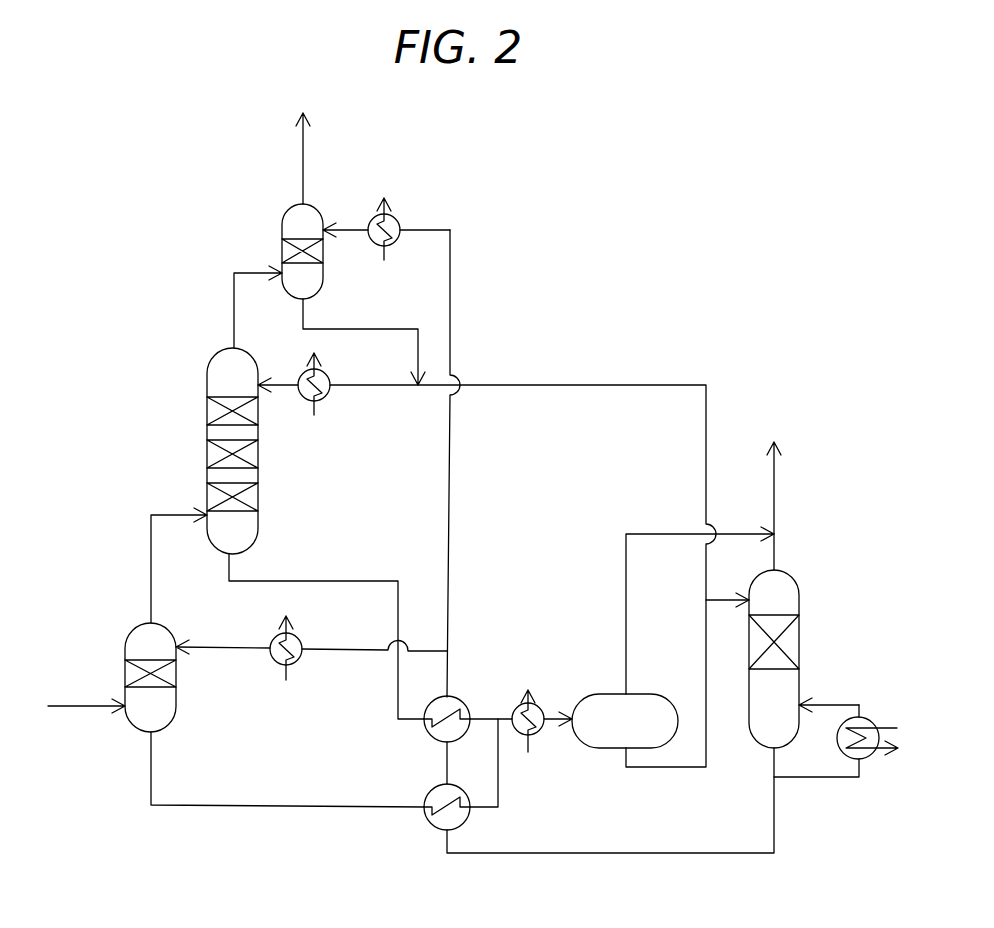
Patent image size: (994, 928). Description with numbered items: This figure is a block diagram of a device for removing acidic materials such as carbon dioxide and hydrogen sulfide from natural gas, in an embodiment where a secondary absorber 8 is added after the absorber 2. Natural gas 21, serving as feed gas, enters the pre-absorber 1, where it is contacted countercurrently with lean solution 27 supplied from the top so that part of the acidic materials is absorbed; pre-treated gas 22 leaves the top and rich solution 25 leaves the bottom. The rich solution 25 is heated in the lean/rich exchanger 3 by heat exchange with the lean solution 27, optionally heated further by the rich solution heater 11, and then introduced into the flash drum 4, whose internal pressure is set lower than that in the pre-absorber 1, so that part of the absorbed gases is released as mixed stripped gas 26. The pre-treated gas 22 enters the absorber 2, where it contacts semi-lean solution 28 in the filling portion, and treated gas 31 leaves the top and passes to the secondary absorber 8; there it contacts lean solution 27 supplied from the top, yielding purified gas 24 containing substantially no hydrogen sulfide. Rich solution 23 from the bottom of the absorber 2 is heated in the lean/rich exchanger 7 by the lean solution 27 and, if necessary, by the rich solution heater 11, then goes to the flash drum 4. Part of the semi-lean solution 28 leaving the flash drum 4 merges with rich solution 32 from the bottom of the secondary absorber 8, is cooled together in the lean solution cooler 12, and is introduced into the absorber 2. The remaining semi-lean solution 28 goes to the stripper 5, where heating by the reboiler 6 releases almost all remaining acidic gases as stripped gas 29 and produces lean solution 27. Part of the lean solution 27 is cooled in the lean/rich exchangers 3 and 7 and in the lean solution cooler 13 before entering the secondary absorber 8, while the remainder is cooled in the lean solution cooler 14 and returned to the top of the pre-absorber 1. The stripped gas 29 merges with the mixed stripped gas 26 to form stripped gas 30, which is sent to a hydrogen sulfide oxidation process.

The pre-absorber 1 is at (125, 649).
The absorber 2 is at (207, 433).
The lean/rich exchanger 3 is at (428, 824).
The flash drum 4 is at (601, 694).
The stripper 5 is at (800, 679).
The reboiler 6 is at (872, 722).
The lean/rich exchanger 7 is at (428, 733).
The secondary absorber 8 is at (282, 228).
The rich solution heater 11 is at (512, 710).
The lean solution cooler 12 is at (330, 375).
The lean solution cooler 13 is at (400, 220).
The lean solution cooler 14 is at (302, 640).
The natural gas 21 is at (75, 706).
The pre-treated gas 22 is at (151, 545).
The rich solution 23 is at (314, 581).
The purified gas 24 is at (303, 155).
The rich solution 25 is at (217, 805).
The mixed stripped gas 26 is at (627, 574).
The lean solution 27 is at (640, 855).
The semi-lean solution 28 is at (660, 768).
The stripped gas 29 is at (778, 556).
The stripped gas 30 is at (778, 483).
The treated gas 31 is at (234, 305).
The rich solution 32 is at (358, 328).